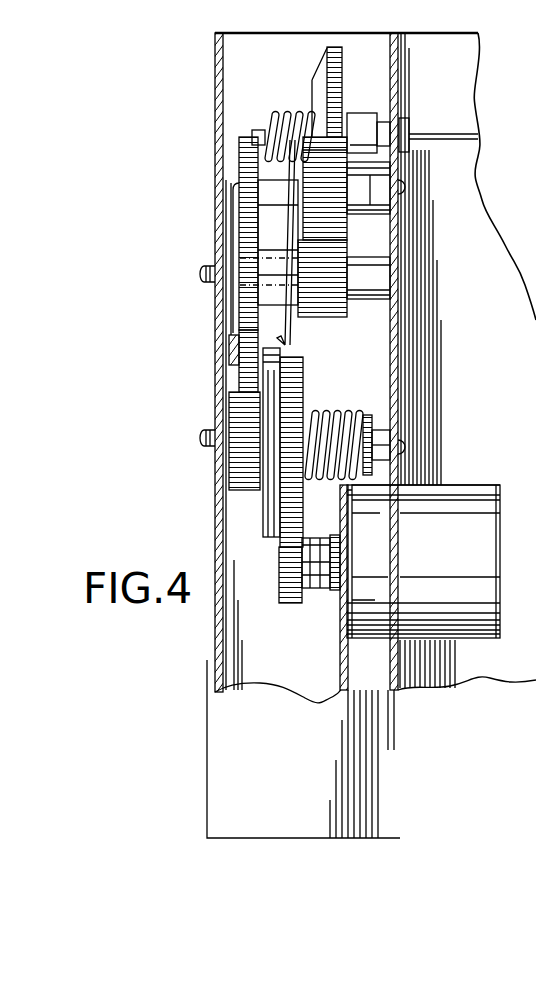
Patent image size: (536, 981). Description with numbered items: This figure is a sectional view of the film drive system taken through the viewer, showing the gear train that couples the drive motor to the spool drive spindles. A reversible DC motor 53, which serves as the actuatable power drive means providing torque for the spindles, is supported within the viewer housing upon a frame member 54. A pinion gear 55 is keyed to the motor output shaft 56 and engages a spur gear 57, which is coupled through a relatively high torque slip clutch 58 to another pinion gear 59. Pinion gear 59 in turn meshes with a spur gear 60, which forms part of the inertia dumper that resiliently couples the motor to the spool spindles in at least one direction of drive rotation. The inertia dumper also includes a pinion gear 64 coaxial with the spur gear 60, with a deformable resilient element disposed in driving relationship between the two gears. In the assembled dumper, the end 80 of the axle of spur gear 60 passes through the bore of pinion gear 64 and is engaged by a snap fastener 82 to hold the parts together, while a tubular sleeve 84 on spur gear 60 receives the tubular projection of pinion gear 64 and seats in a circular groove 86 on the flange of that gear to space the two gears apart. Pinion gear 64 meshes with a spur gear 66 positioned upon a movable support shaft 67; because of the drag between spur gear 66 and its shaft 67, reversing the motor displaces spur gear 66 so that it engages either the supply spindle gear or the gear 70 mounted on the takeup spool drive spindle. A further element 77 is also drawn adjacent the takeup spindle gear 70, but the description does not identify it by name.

The reversible DC motor 53 is at (452, 486).
The frame member 54 is at (347, 674).
The pinion gear 55 is at (279, 592).
The motor output shaft 56 is at (320, 577).
The spur gear 57 is at (303, 388).
The slip clutch 58 is at (292, 337).
The pinion gear 59 is at (245, 490).
The spur gear 60 is at (240, 164).
The pinion gear 64 is at (346, 296).
The spur gear 66 is at (346, 221).
The movable support shaft 67 is at (362, 182).
The gear 70 is at (334, 76).
The shaft 77 is at (352, 122).
The end of axle 80 is at (299, 130).
The snap fastener 82 is at (272, 118).
The tubular sleeve 84 is at (239, 370).
The circular groove 86 is at (238, 185).